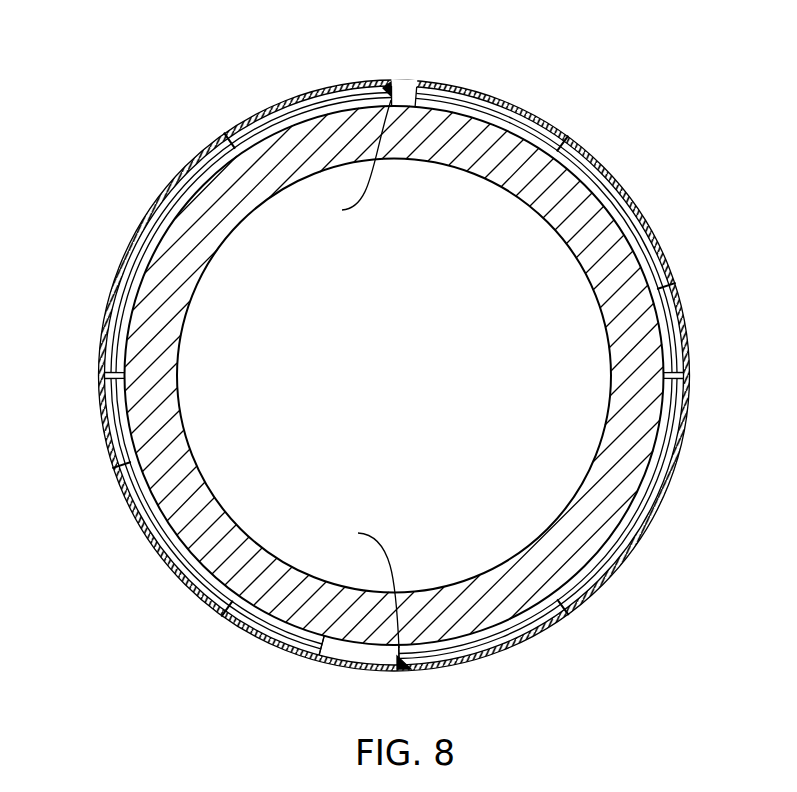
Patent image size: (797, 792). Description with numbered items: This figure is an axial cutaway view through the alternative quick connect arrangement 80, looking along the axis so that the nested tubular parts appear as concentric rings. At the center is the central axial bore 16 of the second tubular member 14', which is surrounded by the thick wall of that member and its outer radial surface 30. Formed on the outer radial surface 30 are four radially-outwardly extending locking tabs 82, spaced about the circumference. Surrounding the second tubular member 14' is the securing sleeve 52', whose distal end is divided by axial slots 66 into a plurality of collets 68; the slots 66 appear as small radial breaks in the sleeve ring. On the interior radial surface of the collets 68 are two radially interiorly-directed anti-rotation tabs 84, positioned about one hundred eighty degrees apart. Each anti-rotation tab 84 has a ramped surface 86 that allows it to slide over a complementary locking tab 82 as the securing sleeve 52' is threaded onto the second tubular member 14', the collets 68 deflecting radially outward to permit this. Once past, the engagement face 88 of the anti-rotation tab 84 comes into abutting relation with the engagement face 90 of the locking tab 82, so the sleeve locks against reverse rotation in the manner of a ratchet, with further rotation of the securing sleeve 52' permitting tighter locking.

The quick connect arrangement 80 is at (681, 54).
The securing sleeve 52' is at (396, 375).
The ramped surface 86 is at (342, 82).
The outer radial surface 30 is at (580, 582).
The collet 68 is at (497, 105).
The locking tab 82 is at (417, 84).
The engagement face 88 is at (383, 667).
The anti-rotation tab 84 is at (388, 82).
The axial slot 66 is at (222, 132).
The second tubular member 14' is at (380, 375).
The central axial bore 16 is at (210, 298).
The engagement face 90 is at (355, 374).